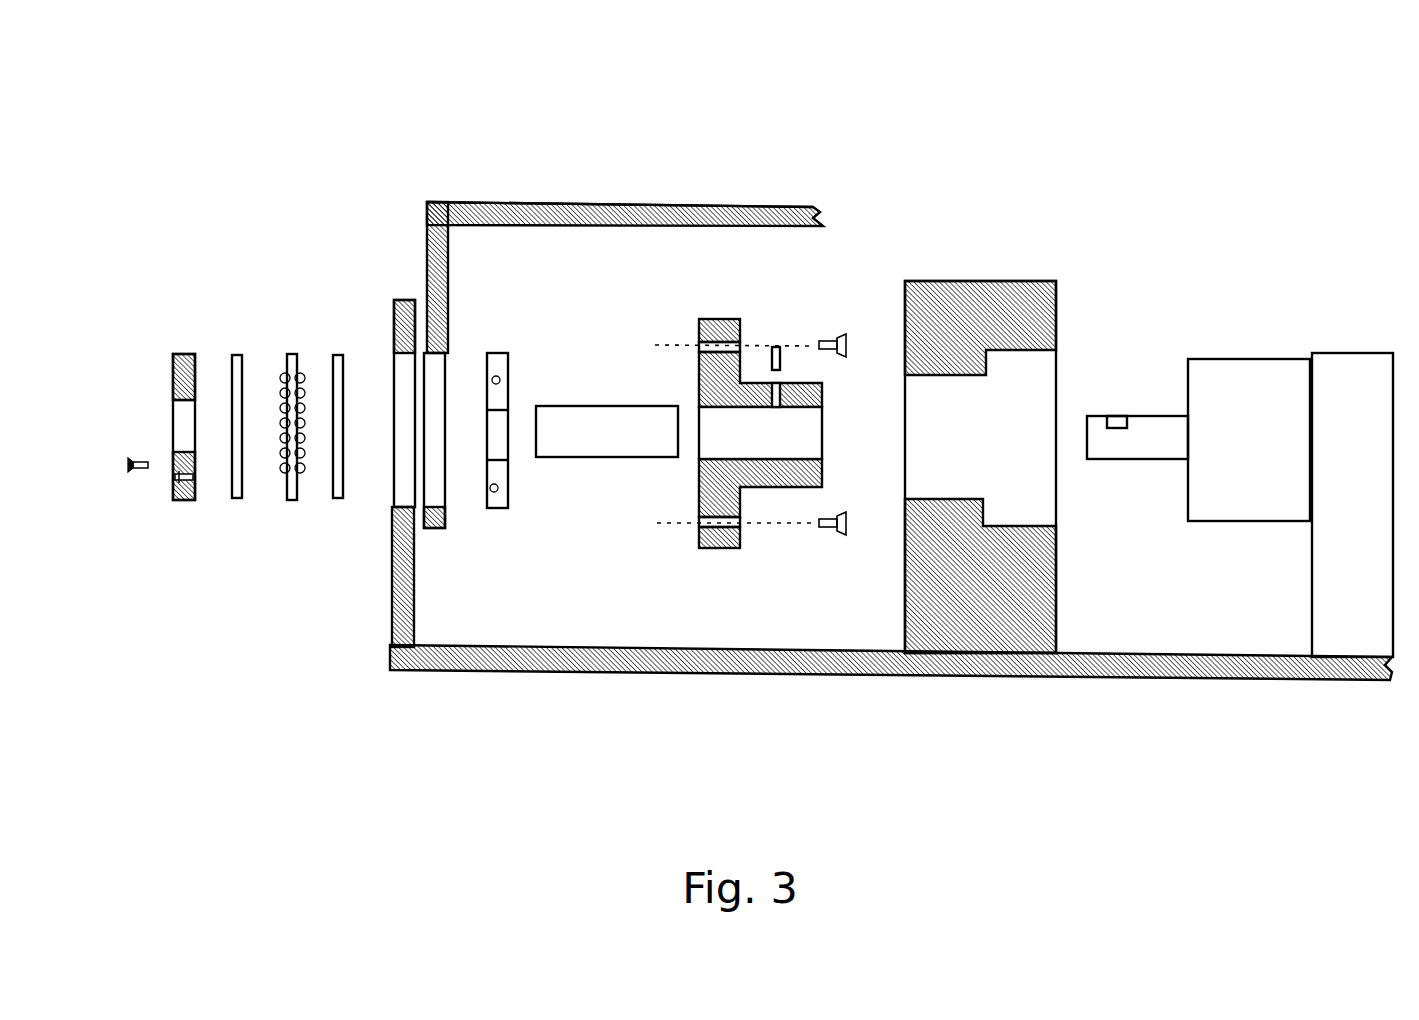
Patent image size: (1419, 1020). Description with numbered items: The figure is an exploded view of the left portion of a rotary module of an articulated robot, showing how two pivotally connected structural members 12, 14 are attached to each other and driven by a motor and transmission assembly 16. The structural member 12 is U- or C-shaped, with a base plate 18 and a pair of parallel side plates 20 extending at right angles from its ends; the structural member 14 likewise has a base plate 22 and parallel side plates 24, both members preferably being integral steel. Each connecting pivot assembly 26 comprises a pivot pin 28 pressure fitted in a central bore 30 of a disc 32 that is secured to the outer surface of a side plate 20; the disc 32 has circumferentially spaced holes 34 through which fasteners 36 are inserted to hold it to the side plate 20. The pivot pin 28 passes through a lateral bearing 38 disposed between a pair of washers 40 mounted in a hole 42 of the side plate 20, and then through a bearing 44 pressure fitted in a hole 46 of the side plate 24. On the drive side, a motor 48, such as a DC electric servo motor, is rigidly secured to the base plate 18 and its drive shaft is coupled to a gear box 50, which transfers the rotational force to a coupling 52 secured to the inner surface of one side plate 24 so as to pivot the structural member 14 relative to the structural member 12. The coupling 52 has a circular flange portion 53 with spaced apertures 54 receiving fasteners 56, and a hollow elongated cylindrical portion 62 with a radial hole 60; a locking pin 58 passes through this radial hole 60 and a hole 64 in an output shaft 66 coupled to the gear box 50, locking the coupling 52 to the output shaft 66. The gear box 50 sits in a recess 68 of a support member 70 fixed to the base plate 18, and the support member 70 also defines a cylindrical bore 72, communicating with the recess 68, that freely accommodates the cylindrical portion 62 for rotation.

The structural member 12 is at (818, 399).
The structural member 14 is at (784, 193).
The motor and transmission assembly 16 is at (1149, 356).
The base plate 18 is at (640, 653).
The side plates 20 is at (390, 628).
The base plate 22 is at (688, 213).
The side plates 24 is at (435, 263).
The connecting pivot assembly 26 is at (590, 357).
The pivot pin 28 is at (575, 437).
The central bore 30 is at (173, 397).
The disc 32 is at (190, 354).
The holes 34 is at (178, 478).
The fasteners 36 is at (145, 469).
The lateral bearing 38 is at (290, 365).
The washers 40 is at (242, 365).
The hole 42 is at (390, 477).
The bearing 44 is at (493, 352).
The hole 46 is at (445, 493).
The motor 48 is at (1337, 377).
The gear box 50 is at (1245, 397).
The coupling 52 is at (740, 397).
The circular flange portion 53 is at (718, 327).
The apertures 54 is at (700, 345).
The fasteners 56 is at (848, 345).
The locking pin 58 is at (775, 345).
The radial hole 60 is at (770, 487).
The hollow elongated cylindrical portion 62 is at (776, 408).
The hole 64 is at (1118, 416).
The output shaft 66 is at (1158, 443).
The recess 68 is at (1027, 497).
The support member 70 is at (1022, 282).
The cylindrical bore 72 is at (1052, 426).